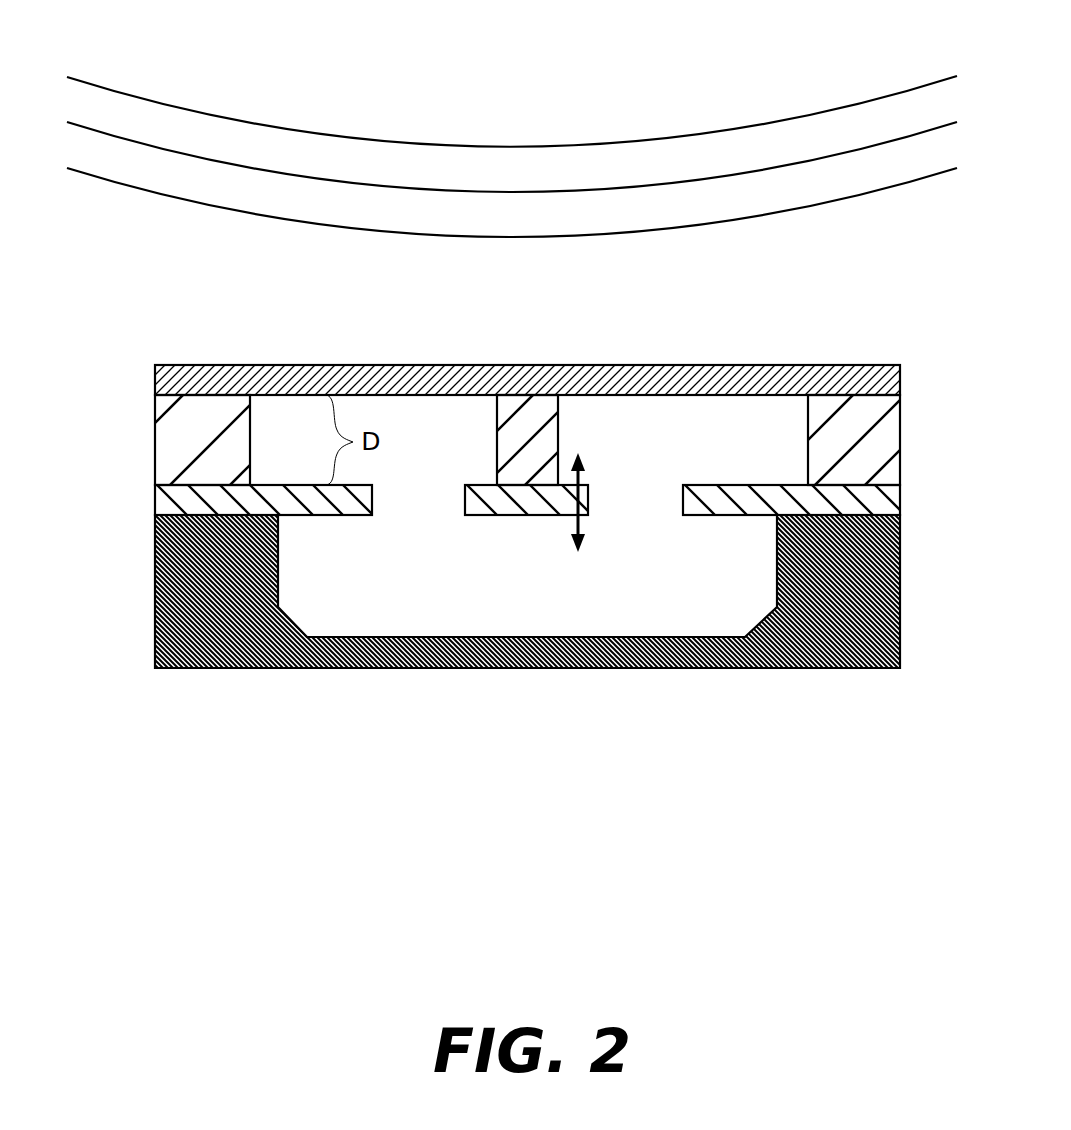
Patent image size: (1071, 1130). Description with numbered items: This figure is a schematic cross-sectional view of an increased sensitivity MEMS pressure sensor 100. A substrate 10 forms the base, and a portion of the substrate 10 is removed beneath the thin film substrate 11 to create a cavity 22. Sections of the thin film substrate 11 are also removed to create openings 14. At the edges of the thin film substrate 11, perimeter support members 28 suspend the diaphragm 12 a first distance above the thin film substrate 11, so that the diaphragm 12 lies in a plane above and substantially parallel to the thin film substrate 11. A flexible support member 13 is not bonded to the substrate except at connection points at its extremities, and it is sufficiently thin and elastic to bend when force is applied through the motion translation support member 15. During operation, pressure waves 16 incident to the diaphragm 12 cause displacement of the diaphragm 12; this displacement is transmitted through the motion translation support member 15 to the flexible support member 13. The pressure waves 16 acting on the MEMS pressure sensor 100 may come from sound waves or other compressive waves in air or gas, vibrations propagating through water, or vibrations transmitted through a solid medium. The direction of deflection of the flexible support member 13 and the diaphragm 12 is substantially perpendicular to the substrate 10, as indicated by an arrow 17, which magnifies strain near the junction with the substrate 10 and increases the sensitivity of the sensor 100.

The substrate 10 is at (900, 593).
The thin film substrate 11 is at (155, 504).
The diaphragm 12 is at (695, 365).
The flexible support member 13 is at (483, 483).
The openings 14 is at (392, 527).
The motion translation support member 15 is at (528, 440).
The pressure waves 16 is at (353, 138).
The arrow 17 is at (580, 448).
The cavity 22 is at (318, 597).
The perimeter support members 28 is at (188, 440).
The MEMS pressure sensor 100 is at (133, 311).